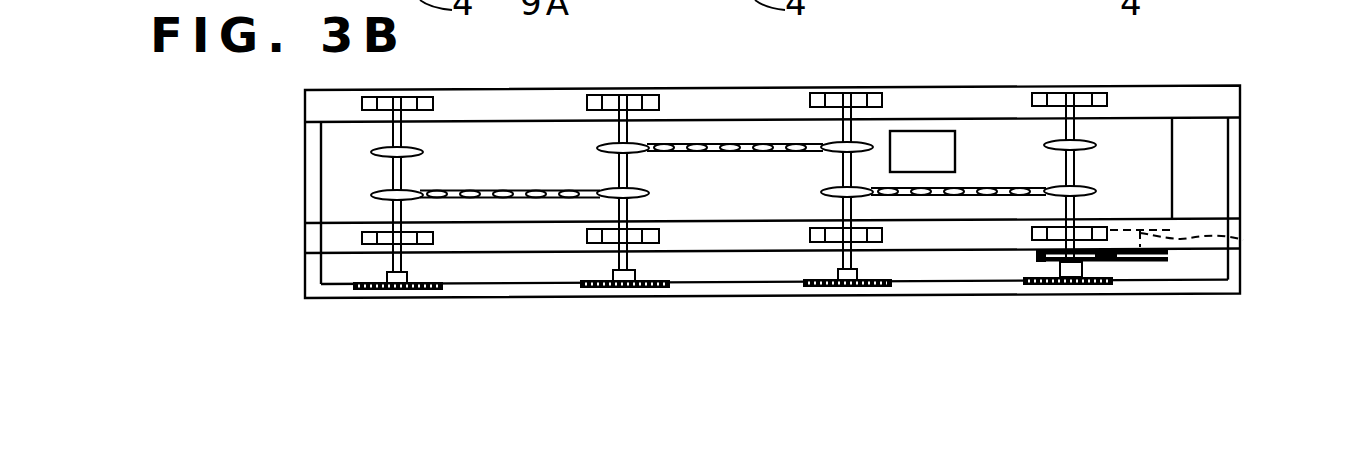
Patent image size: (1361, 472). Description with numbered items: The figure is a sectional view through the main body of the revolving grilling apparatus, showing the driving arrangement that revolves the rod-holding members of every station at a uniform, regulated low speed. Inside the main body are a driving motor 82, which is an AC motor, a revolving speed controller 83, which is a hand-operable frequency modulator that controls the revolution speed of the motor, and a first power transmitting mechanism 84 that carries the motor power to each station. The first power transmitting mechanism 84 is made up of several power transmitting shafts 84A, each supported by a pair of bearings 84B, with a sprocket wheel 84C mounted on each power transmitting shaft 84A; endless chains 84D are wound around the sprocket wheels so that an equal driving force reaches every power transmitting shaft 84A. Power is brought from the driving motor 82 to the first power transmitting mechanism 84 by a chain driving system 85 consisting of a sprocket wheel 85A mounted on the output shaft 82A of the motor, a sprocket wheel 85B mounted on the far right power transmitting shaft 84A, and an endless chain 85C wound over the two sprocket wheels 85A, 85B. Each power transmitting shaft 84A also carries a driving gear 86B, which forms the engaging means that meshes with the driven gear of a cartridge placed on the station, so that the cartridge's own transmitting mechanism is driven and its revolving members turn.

The driving motor 82 is at (1135, 157).
The output shaft 82A is at (1243, 240).
The revolving speed controller 83 is at (918, 152).
The first power transmitting mechanism 84 is at (801, 318).
The power transmitting shaft 84A is at (402, 177).
The bearing 84B is at (385, 100).
The sprocket wheel 84C is at (410, 146).
The endless chain 84D is at (733, 144).
The plate assembly 85 is at (1103, 254).
The sprocket wheel 85A is at (1182, 262).
The sprocket wheel 85B is at (1040, 257).
The endless chain 85C is at (1105, 256).
The driving gear 86B is at (422, 291).